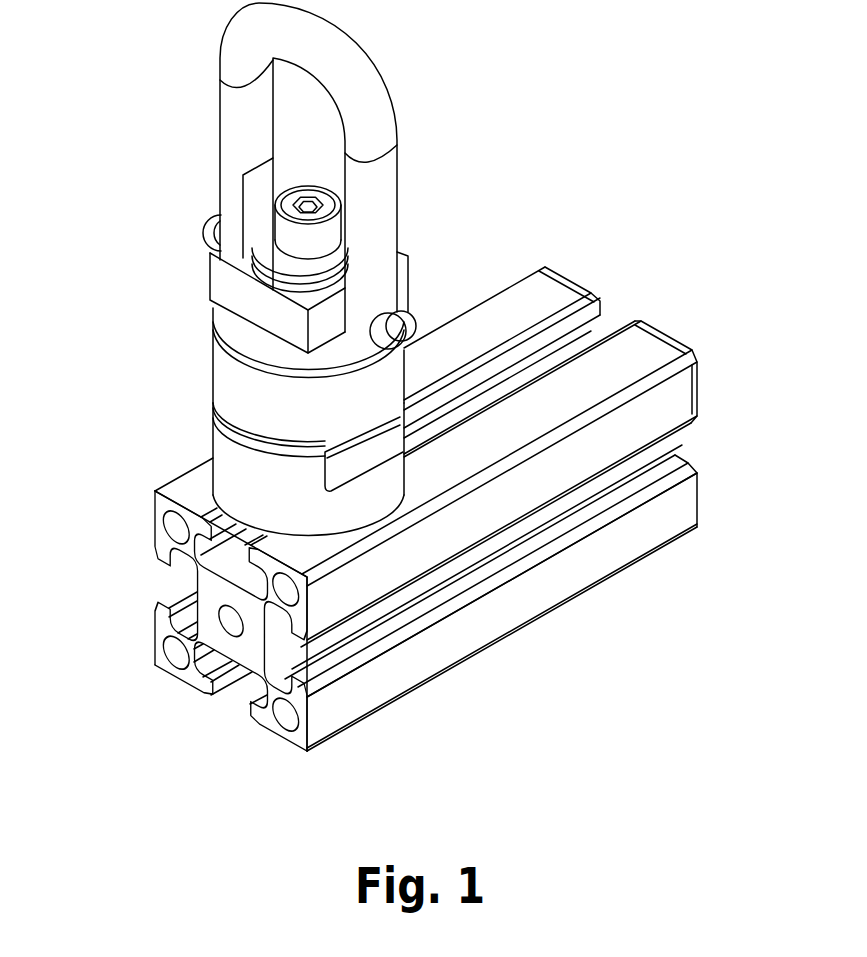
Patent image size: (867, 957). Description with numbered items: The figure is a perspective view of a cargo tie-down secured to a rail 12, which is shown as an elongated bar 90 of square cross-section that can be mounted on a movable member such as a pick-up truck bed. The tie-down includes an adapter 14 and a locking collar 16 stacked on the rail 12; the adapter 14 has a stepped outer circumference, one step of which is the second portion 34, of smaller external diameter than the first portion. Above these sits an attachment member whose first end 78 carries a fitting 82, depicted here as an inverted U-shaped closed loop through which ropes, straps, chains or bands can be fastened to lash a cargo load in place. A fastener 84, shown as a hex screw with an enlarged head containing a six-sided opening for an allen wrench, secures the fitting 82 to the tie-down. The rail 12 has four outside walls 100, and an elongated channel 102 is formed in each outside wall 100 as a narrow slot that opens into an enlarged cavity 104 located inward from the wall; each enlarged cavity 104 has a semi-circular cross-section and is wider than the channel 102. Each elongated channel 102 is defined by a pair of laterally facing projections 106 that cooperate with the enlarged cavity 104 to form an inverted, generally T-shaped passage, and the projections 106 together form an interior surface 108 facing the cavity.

The rail 12 is at (410, 534).
The adapter 14 is at (291, 419).
The locking collar 16 is at (273, 507).
The second portion 34 is at (347, 253).
The first end 78 is at (330, 193).
The fitting 82 is at (381, 78).
The fastener 84 is at (300, 193).
The elongated bar 90 is at (535, 620).
The outside wall 100 is at (548, 282).
The elongated channel 102 is at (600, 293).
The enlarged cavity 104 is at (240, 565).
The laterally facing projections 106 is at (155, 557).
The interior surface 108 is at (313, 677).